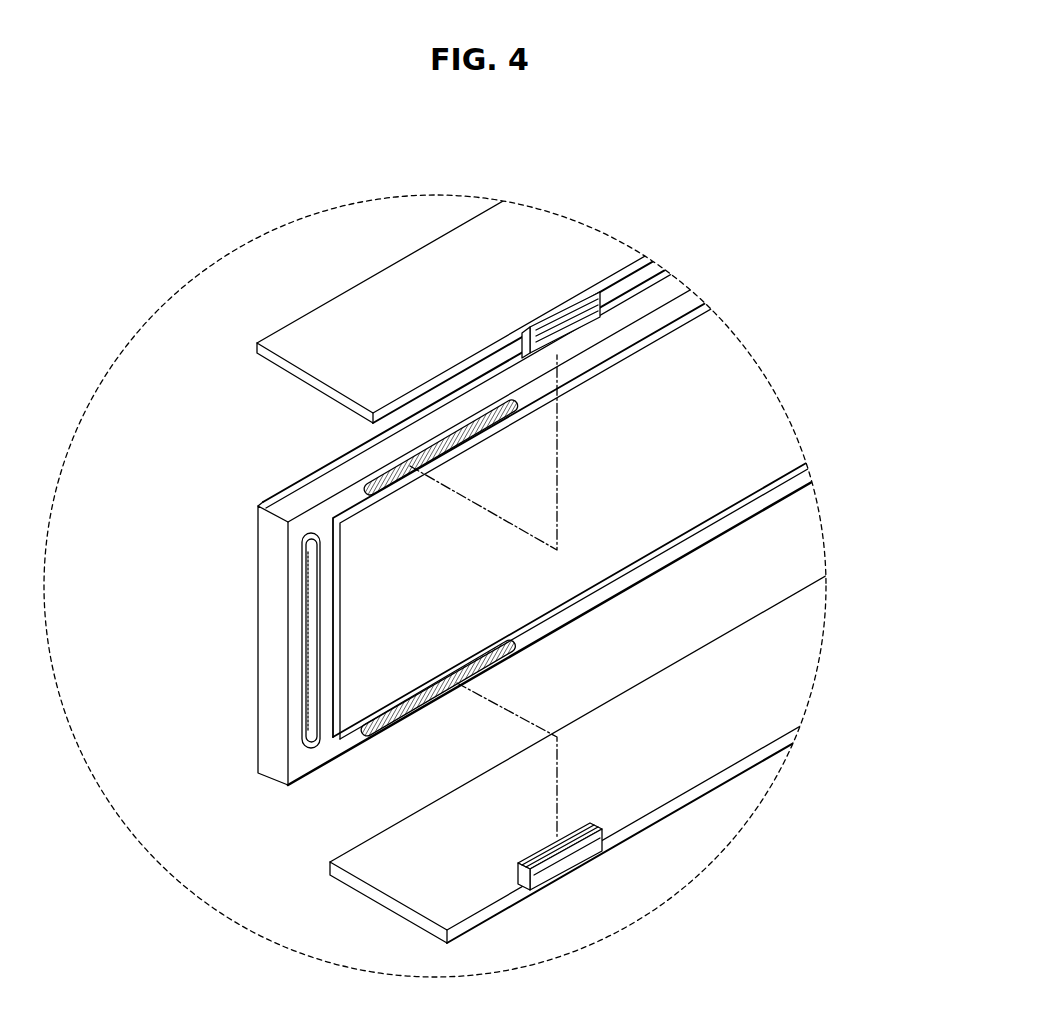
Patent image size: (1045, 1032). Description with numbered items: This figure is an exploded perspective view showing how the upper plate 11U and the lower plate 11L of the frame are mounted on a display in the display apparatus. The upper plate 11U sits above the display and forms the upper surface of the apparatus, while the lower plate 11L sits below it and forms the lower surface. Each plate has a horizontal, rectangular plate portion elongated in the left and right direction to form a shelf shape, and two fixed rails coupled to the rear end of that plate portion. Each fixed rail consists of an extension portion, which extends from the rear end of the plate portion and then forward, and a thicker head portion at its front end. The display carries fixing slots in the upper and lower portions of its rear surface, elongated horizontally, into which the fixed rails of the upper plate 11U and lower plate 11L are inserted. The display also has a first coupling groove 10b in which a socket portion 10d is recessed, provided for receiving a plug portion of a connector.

The first coupling groove 10b is at (311, 628).
The socket portion 10d is at (317, 690).
The upper plate 11U is at (596, 233).
The lower plate 11L is at (648, 755).